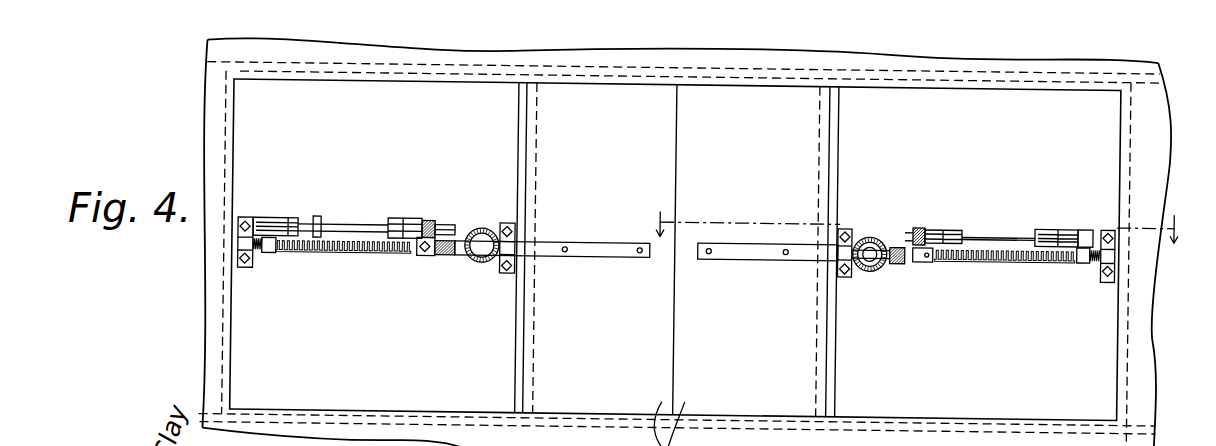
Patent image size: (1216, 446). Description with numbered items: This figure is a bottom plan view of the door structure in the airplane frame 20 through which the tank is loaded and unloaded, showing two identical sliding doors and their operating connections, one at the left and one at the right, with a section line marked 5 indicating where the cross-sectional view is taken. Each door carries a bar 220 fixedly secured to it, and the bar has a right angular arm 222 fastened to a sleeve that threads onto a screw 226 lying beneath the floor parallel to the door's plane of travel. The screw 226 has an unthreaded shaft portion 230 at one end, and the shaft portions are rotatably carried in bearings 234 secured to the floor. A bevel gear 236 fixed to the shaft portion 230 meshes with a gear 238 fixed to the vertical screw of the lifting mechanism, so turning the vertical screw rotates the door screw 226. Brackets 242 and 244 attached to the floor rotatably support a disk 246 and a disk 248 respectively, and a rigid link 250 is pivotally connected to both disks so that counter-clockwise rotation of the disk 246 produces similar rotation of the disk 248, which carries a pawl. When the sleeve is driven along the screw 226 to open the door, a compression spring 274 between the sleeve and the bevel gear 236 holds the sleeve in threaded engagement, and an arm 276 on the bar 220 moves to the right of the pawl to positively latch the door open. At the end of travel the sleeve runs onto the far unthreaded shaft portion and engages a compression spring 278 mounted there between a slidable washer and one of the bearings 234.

The frame 20 is at (954, 400).
The section line 5- 5 is at (917, 221).
The bar 220 is at (587, 238).
The right angular arm 222 is at (928, 254).
The screw 226 is at (340, 250).
The unthreaded shaft portion 230 is at (872, 254).
The bearings 234 is at (250, 266).
The bevel gear 236 is at (460, 253).
The gear 238 is at (490, 260).
The bracket 242 is at (398, 216).
The bracket 244 is at (258, 217).
The disk 246 is at (450, 222).
The disk 248 is at (319, 215).
The rigid link 250 is at (1000, 228).
The compression spring 274 is at (428, 253).
The arm 276 is at (430, 218).
The compression spring 278 is at (259, 250).